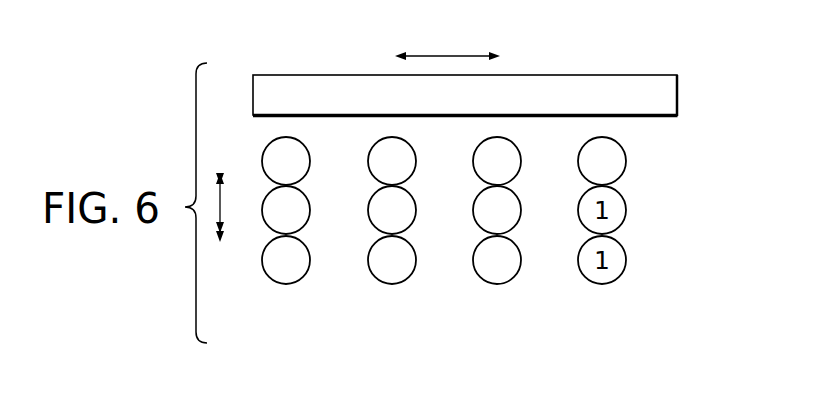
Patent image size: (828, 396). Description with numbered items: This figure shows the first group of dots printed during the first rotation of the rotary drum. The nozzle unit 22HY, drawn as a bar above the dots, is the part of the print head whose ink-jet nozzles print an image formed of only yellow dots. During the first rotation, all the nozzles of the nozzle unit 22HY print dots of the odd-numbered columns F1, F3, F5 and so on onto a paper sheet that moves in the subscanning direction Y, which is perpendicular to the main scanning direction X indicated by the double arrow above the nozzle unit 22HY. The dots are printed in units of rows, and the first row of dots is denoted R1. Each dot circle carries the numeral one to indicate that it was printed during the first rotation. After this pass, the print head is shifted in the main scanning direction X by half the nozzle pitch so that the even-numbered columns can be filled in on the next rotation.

The nozzle unit 22HY is at (548, 92).
The dots of the first row R1 is at (643, 158).
The first odd-numbered column F1 is at (291, 307).
The third odd-numbered column F3 is at (396, 307).
The fifth odd-numbered column F5 is at (500, 307).
The main scanning direction X is at (447, 46).
The subscanning direction Y is at (218, 235).